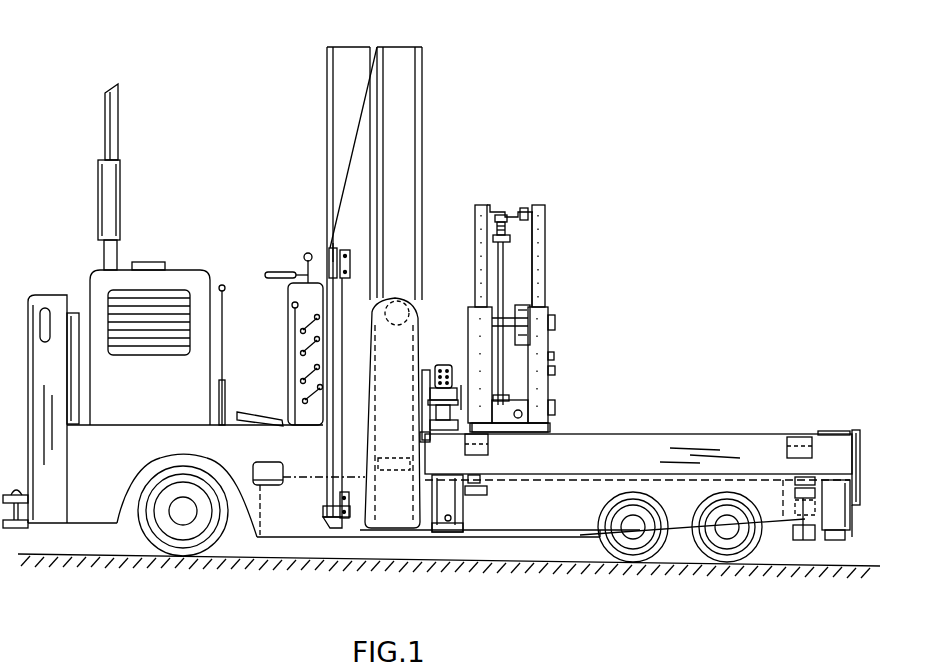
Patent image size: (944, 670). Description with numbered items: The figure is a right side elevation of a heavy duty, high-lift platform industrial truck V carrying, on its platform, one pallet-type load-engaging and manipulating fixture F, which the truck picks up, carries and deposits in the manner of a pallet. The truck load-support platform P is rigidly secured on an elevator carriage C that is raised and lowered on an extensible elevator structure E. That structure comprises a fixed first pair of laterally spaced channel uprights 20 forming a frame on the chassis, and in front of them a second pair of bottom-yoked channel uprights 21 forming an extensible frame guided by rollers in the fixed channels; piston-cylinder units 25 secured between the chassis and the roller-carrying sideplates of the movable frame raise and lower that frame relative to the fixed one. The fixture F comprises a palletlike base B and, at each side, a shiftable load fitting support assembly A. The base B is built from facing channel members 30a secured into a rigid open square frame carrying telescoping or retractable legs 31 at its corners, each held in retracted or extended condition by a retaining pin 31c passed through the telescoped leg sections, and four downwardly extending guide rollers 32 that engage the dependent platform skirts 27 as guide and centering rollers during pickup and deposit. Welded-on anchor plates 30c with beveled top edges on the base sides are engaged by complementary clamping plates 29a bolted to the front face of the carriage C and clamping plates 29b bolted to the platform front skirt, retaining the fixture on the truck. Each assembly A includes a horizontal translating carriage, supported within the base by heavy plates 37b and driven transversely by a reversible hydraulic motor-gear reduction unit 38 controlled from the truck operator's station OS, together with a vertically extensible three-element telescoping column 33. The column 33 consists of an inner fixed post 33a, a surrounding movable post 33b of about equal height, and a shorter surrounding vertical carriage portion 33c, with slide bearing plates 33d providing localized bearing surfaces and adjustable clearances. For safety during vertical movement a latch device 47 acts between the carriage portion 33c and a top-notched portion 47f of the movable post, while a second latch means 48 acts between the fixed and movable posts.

The industrial truck V is at (297, 550).
The operator's station OS is at (255, 275).
The fixed channel uprights 20 is at (327, 68).
The extensible frame channel uprights 21 is at (400, 47).
The extensible elevator structure E is at (394, 161).
The piston-cylinder units 25 is at (333, 290).
The elevator carriage C is at (397, 511).
The clamping plates 29a is at (857, 430).
The clamping plates 29b is at (425, 378).
The channel members 30a is at (628, 464).
The anchor plates 30c is at (789, 450).
The platform skirts 27 is at (540, 590).
The load-support platform P is at (638, 548).
The retractable legs 31 is at (455, 508).
The retaining pin 31c is at (846, 541).
The guide rollers 32 is at (481, 492).
The support plates 37b is at (828, 432).
The hydraulic motor-gear reduction unit 38 is at (445, 364).
The telescoping column 33 is at (551, 296).
The fixed post 33a is at (512, 208).
The movable post 33b is at (546, 250).
The vertical carriage portion 33c is at (549, 320).
The slide bearing plates 33d is at (578, 214).
The latch device 47 is at (540, 338).
The top-notched portion 47f is at (526, 210).
The second latch means 48 is at (497, 240).
The load fitting support assemblies A is at (559, 397).
The load-engaging and manipulating fixture F is at (731, 345).
The palletlike base B is at (766, 419).